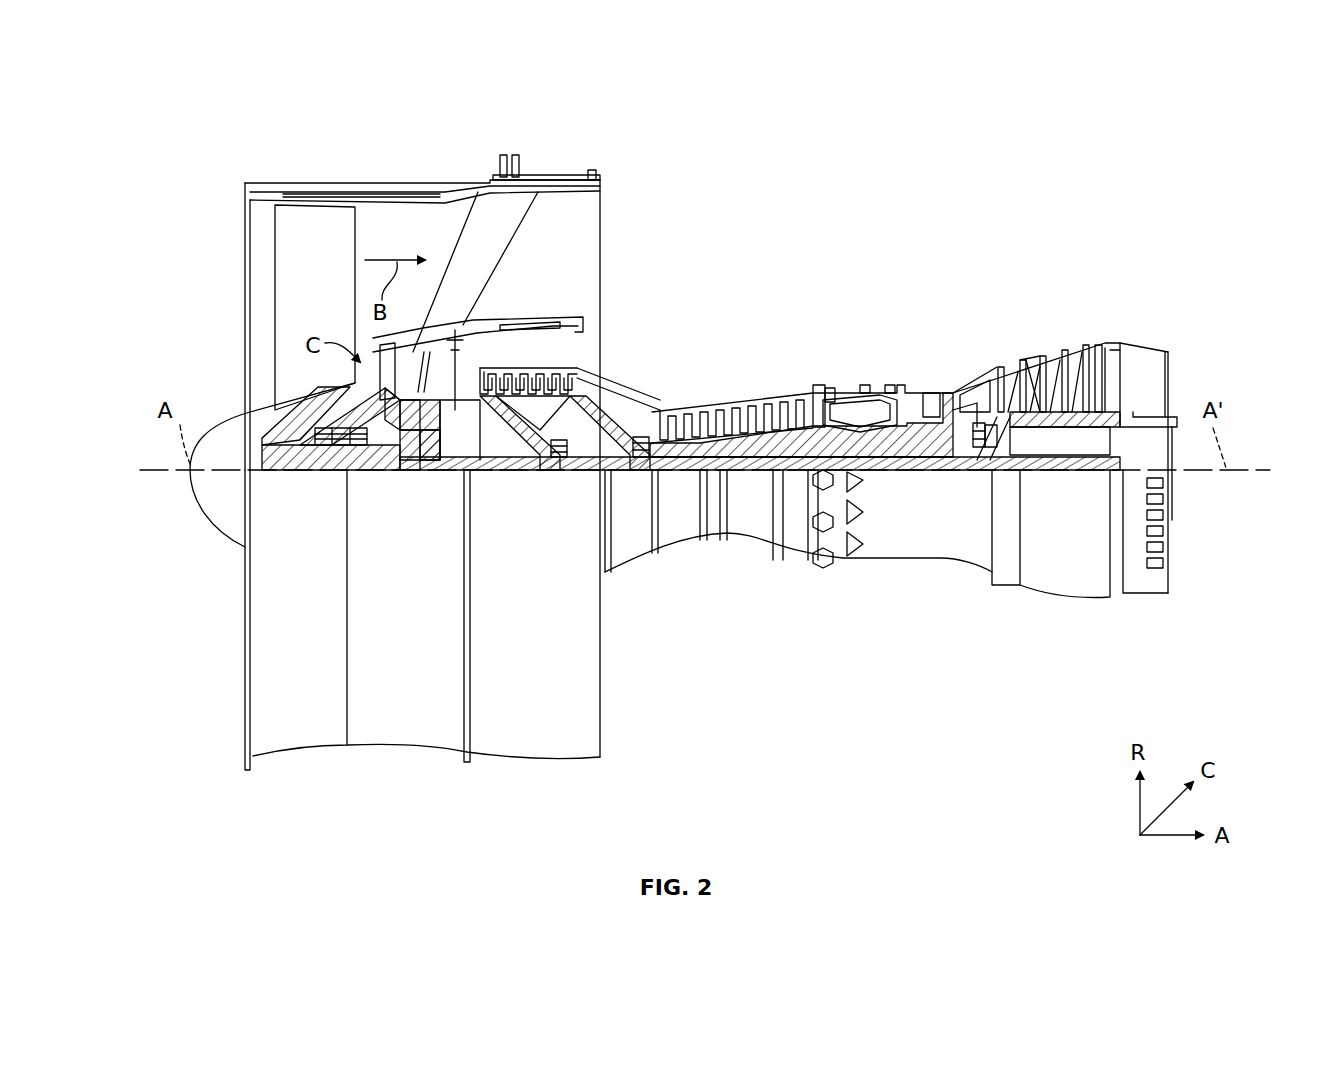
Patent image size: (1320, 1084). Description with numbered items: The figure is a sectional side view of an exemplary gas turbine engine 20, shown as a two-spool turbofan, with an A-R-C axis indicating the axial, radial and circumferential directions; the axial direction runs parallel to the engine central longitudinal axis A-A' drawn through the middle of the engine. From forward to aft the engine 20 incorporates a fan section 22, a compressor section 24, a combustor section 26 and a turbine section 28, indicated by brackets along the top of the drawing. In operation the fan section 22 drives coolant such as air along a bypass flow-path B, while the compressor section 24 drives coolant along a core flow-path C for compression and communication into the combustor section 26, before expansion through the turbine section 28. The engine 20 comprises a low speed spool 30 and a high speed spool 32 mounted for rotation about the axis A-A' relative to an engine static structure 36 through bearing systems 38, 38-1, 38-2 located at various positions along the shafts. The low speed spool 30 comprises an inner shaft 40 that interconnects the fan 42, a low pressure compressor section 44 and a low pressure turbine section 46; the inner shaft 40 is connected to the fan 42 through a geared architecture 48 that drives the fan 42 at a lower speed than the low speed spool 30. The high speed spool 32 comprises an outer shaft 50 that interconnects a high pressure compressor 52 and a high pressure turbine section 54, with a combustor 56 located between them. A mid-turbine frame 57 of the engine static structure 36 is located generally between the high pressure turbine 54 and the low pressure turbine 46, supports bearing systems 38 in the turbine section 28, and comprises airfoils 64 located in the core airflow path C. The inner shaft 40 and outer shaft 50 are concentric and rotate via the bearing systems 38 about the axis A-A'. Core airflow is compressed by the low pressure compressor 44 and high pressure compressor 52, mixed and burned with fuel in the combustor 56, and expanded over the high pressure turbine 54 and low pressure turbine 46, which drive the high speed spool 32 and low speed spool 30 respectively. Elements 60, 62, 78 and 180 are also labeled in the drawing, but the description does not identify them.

The gas turbine engine 20 is at (910, 178).
The fan section 22 is at (445, 168).
The compressor section 24 is at (475, 288).
The combustor section 26 is at (912, 288).
The turbine section 28 is at (1110, 288).
The low speed spool 30 is at (757, 478).
The high speed spool 32 is at (803, 430).
The engine static structure 36 is at (223, 775).
The bearing system 38 is at (975, 435).
The bearing system 38-1 is at (320, 460).
The bearing system 38-2 is at (557, 460).
The inner shaft 40 is at (620, 470).
The fan 42 is at (272, 376).
The low pressure compressor section 44 is at (537, 372).
The low pressure turbine section 46 is at (1080, 350).
The geared architecture 48 is at (423, 500).
The outer shaft 50 is at (853, 457).
The high pressure compressor 52 is at (753, 407).
The high pressure turbine section 54 is at (931, 397).
The combustor 56 is at (870, 403).
The mid-turbine frame 57 is at (977, 403).
The inner fixed structure 60 is at (443, 437).
The outer fixed structure 62 is at (443, 417).
The airfoils 64 is at (970, 405).
The blade outer air seal 78 is at (1030, 377).
The airfoil 180 is at (1033, 370).